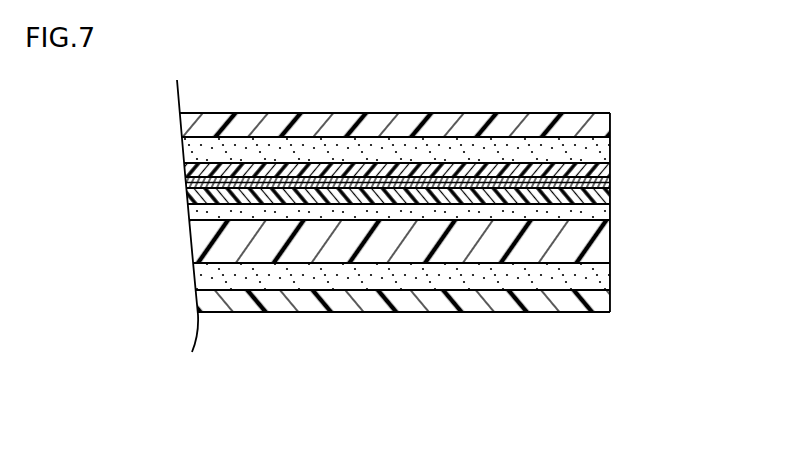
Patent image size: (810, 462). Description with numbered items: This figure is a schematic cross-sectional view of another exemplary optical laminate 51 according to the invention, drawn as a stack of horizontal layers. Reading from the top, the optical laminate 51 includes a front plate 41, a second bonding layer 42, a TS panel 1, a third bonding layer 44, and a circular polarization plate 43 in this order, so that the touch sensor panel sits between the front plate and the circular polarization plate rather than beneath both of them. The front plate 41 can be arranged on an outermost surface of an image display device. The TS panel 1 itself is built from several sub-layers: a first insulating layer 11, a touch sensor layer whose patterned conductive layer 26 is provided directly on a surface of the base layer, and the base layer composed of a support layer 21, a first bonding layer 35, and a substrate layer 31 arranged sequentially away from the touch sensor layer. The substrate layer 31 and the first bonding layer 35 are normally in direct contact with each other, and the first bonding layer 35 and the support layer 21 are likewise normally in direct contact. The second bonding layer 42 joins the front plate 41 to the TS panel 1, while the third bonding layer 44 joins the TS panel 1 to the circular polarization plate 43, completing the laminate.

The optical laminate 51 is at (648, 74).
The front plate 41 is at (612, 128).
The second bonding layer 42 is at (612, 151).
The TS panel 1 is at (628, 164).
The first insulating layer 11 is at (185, 168).
The patterned conductive layer 26 is at (187, 182).
The support layer 21 is at (190, 196).
The first bonding layer 35 is at (195, 212).
The substrate layer 31 is at (202, 240).
The third bonding layer 44 is at (612, 276).
The circular polarization plate 43 is at (612, 298).